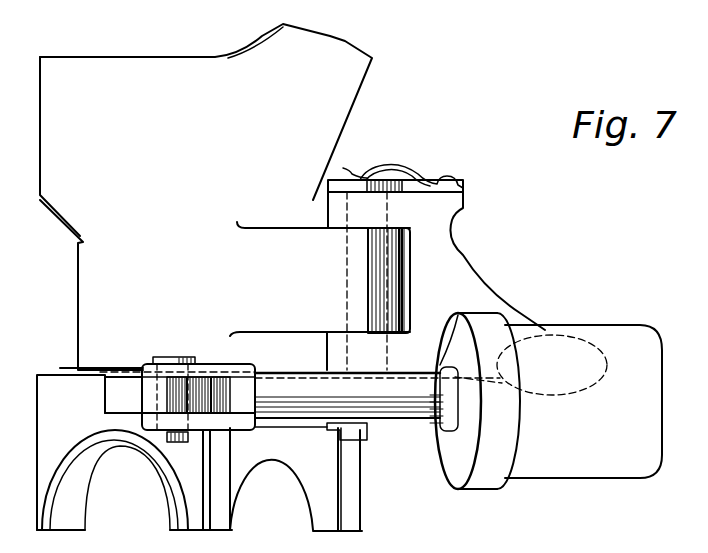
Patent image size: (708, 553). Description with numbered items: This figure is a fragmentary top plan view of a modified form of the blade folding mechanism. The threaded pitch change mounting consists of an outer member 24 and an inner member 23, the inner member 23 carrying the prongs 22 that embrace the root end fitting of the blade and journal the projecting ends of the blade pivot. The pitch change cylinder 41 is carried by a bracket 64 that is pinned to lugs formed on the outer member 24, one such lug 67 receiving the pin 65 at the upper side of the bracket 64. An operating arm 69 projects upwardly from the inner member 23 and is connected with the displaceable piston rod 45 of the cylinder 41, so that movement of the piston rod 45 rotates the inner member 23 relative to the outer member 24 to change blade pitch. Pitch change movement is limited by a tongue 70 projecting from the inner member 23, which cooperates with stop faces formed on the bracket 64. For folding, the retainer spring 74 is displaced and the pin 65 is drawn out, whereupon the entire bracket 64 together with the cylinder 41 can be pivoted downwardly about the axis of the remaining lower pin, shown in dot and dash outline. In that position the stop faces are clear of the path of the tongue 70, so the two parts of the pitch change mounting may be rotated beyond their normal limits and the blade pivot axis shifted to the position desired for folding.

The prongs 22 is at (220, 522).
The inner member 23 is at (78, 370).
The outer member 24 is at (292, 197).
The pitch change cylinder 41 is at (627, 307).
The piston rod 45 is at (413, 423).
The bracket 64 is at (533, 322).
The pin 65 is at (392, 180).
The lug 67 is at (368, 283).
The operating arm 69 is at (152, 400).
The tongue 70 is at (360, 440).
The retainer spring 74 is at (423, 177).